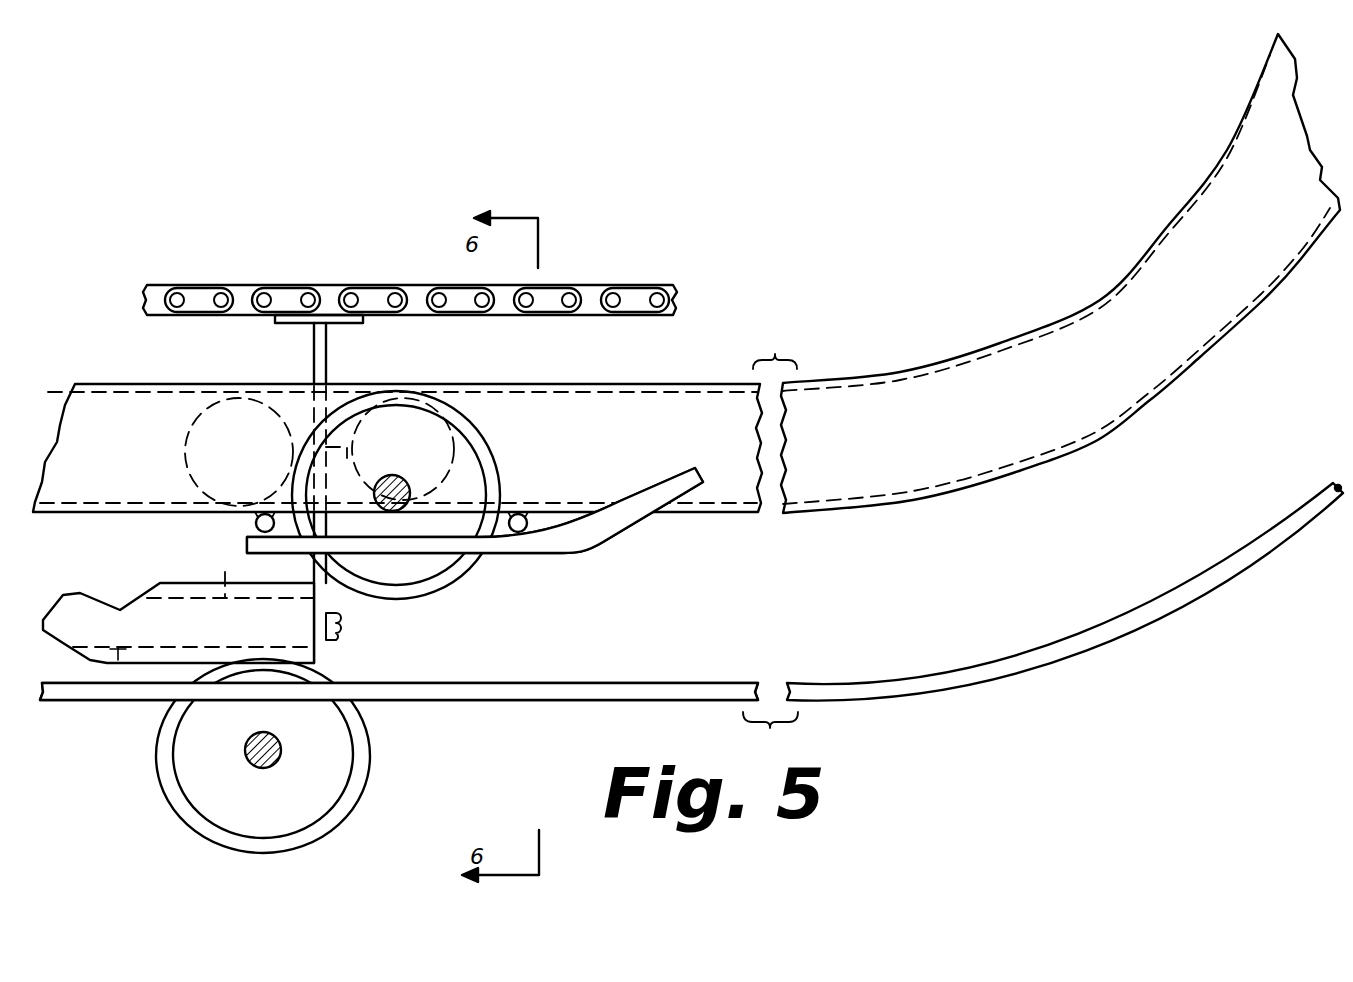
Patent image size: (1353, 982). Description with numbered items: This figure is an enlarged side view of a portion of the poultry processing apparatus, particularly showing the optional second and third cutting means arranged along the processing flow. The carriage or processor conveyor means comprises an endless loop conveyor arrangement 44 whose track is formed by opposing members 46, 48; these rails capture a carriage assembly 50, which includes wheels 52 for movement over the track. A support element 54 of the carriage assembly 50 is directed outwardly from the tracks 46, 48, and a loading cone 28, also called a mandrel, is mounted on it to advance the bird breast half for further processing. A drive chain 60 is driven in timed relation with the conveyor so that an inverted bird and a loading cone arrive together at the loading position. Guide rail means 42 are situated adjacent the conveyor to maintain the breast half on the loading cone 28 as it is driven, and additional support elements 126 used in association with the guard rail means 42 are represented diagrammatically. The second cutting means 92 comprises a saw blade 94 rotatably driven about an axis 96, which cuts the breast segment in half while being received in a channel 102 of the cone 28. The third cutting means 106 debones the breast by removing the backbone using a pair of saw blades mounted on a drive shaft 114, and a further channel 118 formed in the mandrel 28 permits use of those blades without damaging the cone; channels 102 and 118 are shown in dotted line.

The loading cone 28 is at (190, 640).
The guide rail means 42 is at (582, 548).
The endless loop conveyor arrangement 44 is at (1060, 273).
The opposing track member 46 is at (815, 503).
The opposing track member 48 is at (831, 383).
The carriage assembly 50 is at (174, 435).
The wheel 52 is at (258, 464).
The support element 54 is at (338, 600).
The drive chain 60 is at (483, 316).
The second cutting means 92 is at (426, 515).
The saw blade 94 is at (412, 598).
The axis 96 is at (395, 477).
The channel 102 is at (222, 575).
The third cutting means 106 is at (320, 756).
The drive shaft 114 is at (266, 768).
The channel 118 is at (105, 665).
The additional support elements 126 is at (255, 522).